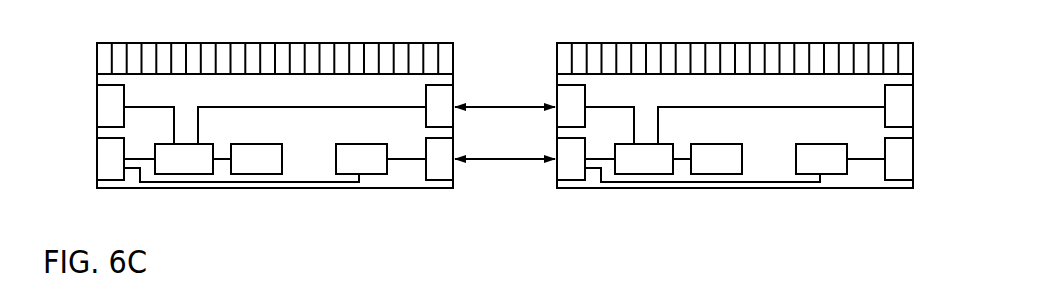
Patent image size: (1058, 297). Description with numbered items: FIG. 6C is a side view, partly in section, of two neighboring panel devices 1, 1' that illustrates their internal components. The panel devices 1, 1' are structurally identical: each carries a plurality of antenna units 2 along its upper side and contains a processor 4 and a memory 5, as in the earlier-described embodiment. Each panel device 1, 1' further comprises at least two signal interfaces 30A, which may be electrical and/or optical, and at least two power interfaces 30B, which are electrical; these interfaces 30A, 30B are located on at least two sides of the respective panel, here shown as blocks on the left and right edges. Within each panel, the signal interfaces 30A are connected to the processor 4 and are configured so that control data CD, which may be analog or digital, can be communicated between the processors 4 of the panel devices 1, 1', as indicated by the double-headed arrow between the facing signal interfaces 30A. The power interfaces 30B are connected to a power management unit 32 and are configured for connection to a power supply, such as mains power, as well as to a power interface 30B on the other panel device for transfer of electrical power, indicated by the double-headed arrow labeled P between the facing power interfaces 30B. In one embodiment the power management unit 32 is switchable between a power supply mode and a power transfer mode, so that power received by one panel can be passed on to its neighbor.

The panel device 1 is at (275, 134).
The panel device 1' is at (735, 134).
The antenna units 2 is at (242, 55).
The processor 4 is at (189, 169).
The memory 5 is at (262, 169).
The power management unit 32 is at (373, 169).
The signal interfaces 30A is at (108, 95).
The power interfaces 30B is at (110, 176).
The control data CD is at (505, 92).
The pitch between modules P is at (505, 175).